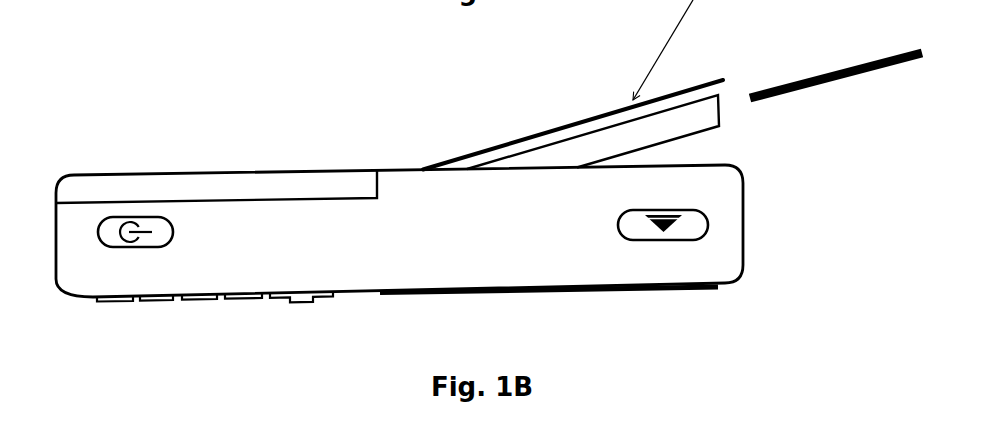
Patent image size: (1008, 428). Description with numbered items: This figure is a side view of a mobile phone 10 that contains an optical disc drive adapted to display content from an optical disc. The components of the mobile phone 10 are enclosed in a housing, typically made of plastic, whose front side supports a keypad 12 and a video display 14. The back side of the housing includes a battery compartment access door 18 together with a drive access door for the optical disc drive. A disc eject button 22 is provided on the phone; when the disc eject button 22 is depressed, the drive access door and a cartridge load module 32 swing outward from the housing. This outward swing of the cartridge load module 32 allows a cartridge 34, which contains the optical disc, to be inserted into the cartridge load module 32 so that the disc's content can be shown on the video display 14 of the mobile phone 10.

The mobile phone 10 is at (753, 248).
The keypad 12 is at (240, 310).
The video display 14 is at (603, 303).
The battery compartment access door 18 is at (170, 168).
The disc eject button 22 is at (112, 228).
The cartridge load module 32 is at (712, 138).
The cartridge 34 is at (827, 70).